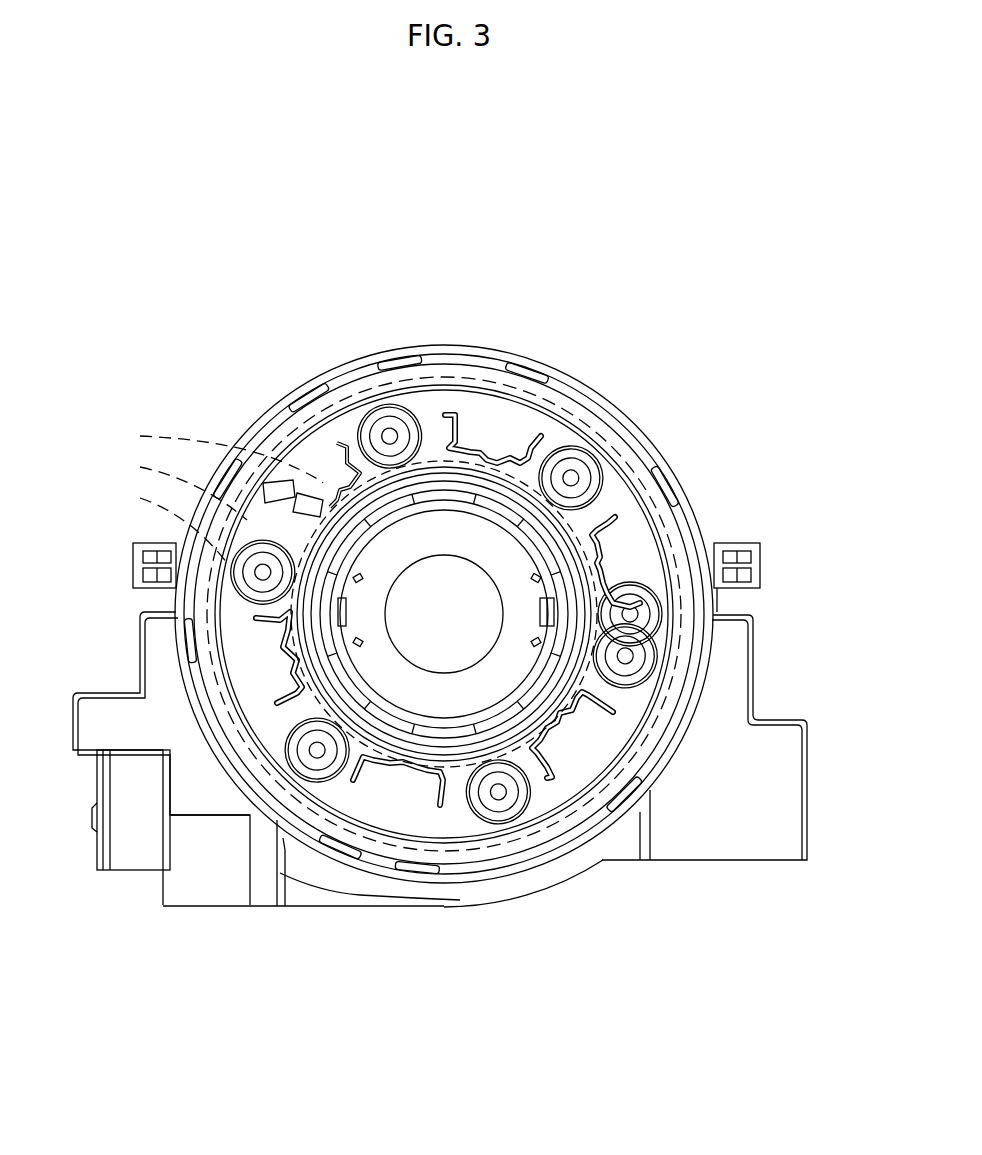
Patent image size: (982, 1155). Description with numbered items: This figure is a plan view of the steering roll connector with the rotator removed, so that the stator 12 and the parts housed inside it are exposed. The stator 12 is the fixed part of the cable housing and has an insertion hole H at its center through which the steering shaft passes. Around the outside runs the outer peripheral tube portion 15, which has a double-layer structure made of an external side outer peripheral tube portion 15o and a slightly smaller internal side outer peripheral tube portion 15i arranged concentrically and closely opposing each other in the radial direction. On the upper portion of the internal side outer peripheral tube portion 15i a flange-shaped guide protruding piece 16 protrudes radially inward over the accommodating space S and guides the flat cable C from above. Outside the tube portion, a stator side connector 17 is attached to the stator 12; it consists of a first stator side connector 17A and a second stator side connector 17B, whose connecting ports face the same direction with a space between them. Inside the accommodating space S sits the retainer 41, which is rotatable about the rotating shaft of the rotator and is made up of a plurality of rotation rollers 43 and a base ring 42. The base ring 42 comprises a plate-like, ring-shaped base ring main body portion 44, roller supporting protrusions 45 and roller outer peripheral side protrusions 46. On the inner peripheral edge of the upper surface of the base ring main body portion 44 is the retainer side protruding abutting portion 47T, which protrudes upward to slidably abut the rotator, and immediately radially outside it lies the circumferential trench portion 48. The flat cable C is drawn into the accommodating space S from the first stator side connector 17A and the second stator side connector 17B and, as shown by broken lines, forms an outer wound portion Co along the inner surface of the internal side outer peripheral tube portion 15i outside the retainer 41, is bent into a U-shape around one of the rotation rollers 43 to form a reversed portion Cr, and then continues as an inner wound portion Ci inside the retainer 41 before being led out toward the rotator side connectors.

The stator 12 is at (235, 422).
The outer peripheral tube portion 15 is at (154, 758).
The external side outer peripheral tube portion 15o is at (180, 623).
The internal side outer peripheral tube portion 15i is at (187, 677).
The guide protruding piece 16 is at (628, 468).
The stator side connector 17 is at (449, 800).
The first stator side connector 17A is at (218, 907).
The second stator side connector 17B is at (706, 862).
The retainer 41 is at (548, 212).
The base ring 42 is at (505, 270).
The rotation roller 43 is at (556, 447).
The base ring main body portion 44 is at (352, 413).
The roller supporting protrusion 45 is at (400, 403).
The roller outer peripheral side protrusion 46 is at (473, 440).
The retainer side protruding abutting portion 47T is at (333, 497).
The trench portion 48 is at (363, 487).
The flat cable C is at (108, 425).
The inner wound portion Ci is at (218, 452).
The reversed portion Cr is at (180, 489).
The outer wound portion Co is at (170, 530).
The insertion hole H is at (451, 620).
The accommodating space S is at (639, 571).